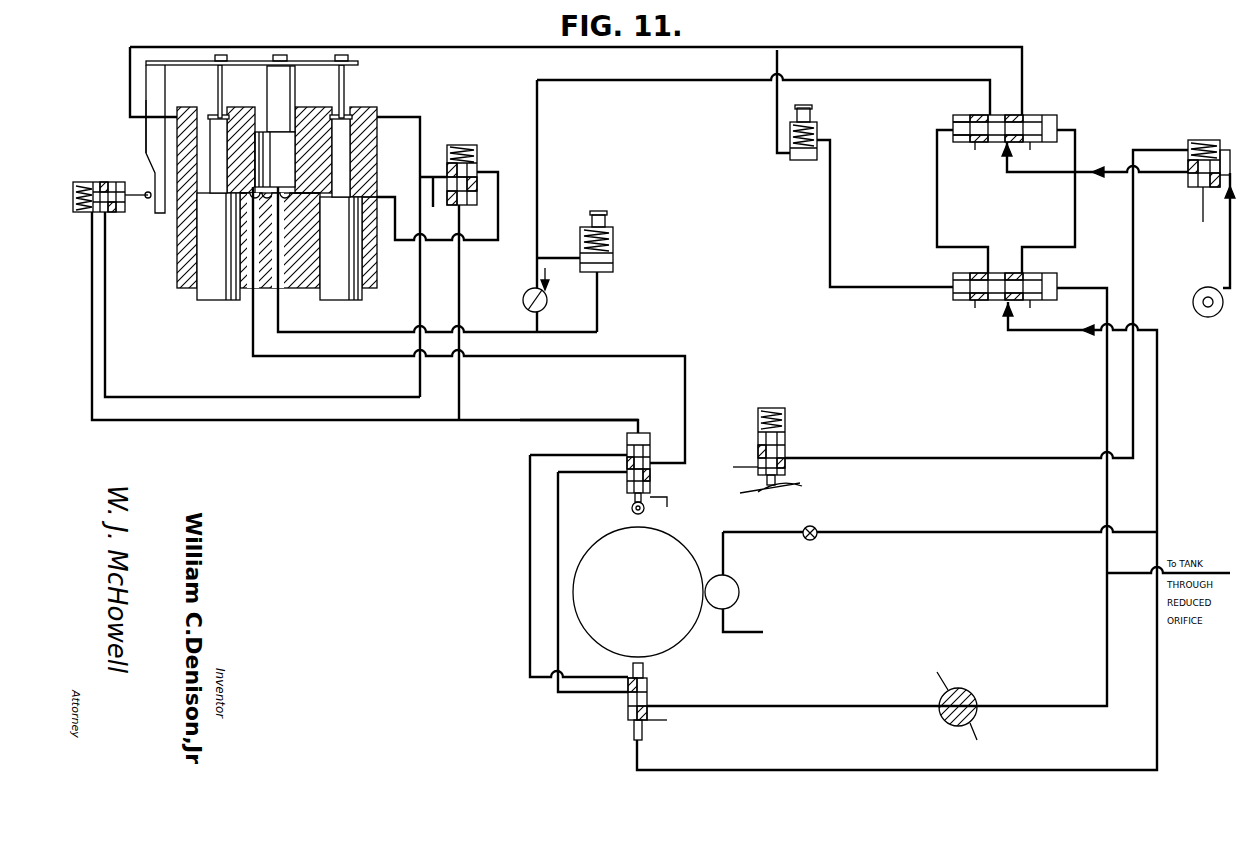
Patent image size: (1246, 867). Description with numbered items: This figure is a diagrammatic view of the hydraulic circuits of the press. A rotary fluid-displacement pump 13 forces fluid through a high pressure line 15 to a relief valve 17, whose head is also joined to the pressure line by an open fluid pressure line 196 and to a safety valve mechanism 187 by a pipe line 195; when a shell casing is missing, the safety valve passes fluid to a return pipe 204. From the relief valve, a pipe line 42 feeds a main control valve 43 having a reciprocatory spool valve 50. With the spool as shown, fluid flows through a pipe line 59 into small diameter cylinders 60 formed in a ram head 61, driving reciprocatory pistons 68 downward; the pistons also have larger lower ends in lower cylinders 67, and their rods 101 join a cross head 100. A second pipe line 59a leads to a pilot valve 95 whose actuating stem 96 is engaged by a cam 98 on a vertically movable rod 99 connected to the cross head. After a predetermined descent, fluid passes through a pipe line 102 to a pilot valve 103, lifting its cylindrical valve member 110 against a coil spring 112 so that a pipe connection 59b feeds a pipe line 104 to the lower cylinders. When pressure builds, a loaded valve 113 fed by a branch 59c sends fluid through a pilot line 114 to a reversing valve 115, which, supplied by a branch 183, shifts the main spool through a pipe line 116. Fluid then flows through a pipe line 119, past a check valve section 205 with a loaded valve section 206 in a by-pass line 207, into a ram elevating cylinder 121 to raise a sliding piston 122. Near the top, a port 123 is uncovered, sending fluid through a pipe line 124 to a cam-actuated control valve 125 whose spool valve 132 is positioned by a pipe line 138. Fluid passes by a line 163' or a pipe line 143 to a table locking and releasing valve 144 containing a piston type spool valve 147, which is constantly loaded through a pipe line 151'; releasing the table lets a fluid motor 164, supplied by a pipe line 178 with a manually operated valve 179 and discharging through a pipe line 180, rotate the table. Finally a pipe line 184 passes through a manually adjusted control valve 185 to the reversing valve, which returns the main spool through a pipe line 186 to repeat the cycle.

The rotary fluid-displacement pump 13 is at (1203, 312).
The high pressure line 15 is at (1230, 248).
The relief valve 17 is at (1190, 142).
The pipe line 42 is at (1022, 174).
The main control valve 43 is at (1030, 115).
The spool valve 50 is at (955, 126).
The pipe line 59 is at (421, 112).
The second pipe line 59a is at (420, 292).
The pipe connection 59b is at (440, 203).
The branch 59c is at (777, 106).
The small diameter cylinders 60 is at (212, 120).
The ram head 61 is at (372, 118).
The lower cylinders 67 is at (178, 212).
The reciprocatory pistons 68 is at (207, 266).
The pilot valve 95 is at (110, 182).
The actuating stem 96 is at (146, 200).
The cam 98 is at (150, 163).
The vertically movable rod 99 is at (146, 126).
The cross head 100 is at (212, 58).
The rods 101 is at (220, 64).
The pipe line 102 is at (240, 422).
The pilot valve 103 is at (477, 176).
The pipe line 104 is at (498, 246).
The cylindrical valve member 110 is at (477, 166).
The coil spring 112 is at (448, 152).
The loaded valve 113 is at (817, 140).
The pilot line 114 is at (831, 226).
The reversing valve 115 is at (960, 302).
The pipe line 116 is at (938, 226).
The pipe line 119 is at (300, 333).
The ram elevating cylinder 121 is at (290, 150).
The sliding piston 122 is at (275, 70).
The port 123 is at (258, 140).
The pipe line 124 is at (318, 358).
The cam-actuated control valve 125 is at (650, 478).
The spool valve 132 is at (627, 452).
The pipe line 138 is at (578, 420).
The pipe line 143 is at (559, 536).
The table locking and releasing valve 144 is at (647, 696).
The piston type spool valve 147 is at (628, 714).
The pipe line 151' is at (897, 635).
The line 163' is at (549, 566).
The fluid motor 164 is at (740, 592).
The pipe line 178 is at (960, 534).
The manually operated valve 179 is at (815, 530).
The pipe line 180 is at (756, 627).
The branch 183 is at (1034, 332).
The pipe line 184 is at (754, 706).
The manually adjusted control valve 185 is at (963, 708).
The pipe line 186 is at (1058, 247).
The safety valve mechanism 187 is at (785, 426).
The pipe line 195 is at (886, 458).
The open fluid pressure line 196 is at (1225, 150).
The return pipe 204 is at (731, 456).
The check valve section 205 is at (556, 290).
The loaded valve section 206 is at (613, 256).
The by-pass line 207 is at (598, 306).